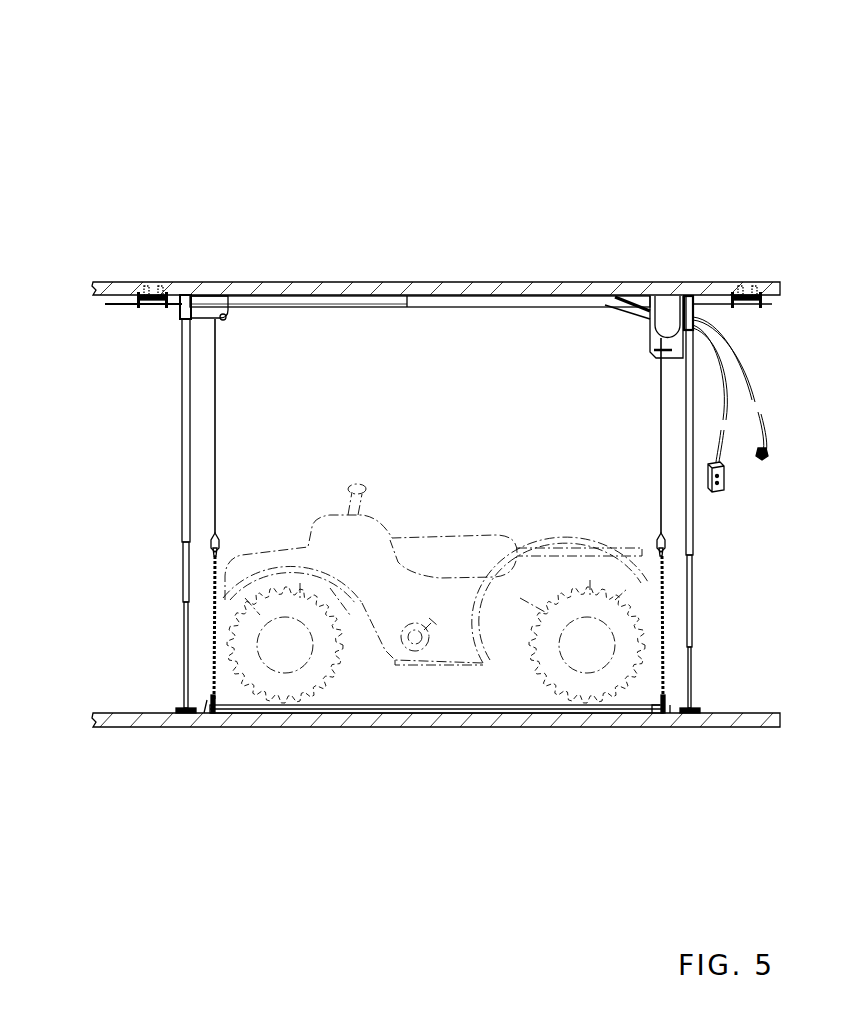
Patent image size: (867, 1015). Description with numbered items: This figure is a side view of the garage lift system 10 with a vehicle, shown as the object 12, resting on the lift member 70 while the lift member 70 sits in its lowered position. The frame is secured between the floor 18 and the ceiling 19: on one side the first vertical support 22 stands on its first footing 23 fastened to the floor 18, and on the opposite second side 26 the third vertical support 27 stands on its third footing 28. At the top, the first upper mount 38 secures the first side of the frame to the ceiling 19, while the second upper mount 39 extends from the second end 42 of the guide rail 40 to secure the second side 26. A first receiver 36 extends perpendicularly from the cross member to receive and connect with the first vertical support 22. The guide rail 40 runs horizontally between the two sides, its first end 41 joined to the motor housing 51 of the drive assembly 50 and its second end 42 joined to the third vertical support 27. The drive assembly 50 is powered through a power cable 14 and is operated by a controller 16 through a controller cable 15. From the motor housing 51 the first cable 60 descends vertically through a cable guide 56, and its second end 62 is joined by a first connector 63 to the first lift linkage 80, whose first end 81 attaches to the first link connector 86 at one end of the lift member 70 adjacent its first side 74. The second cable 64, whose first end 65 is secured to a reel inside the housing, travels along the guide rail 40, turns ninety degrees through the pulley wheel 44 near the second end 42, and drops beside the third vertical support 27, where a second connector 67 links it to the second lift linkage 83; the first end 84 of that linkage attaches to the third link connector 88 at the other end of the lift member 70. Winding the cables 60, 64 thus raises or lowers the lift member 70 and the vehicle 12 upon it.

The garage lift system 10 is at (215, 112).
The object 12 is at (413, 537).
The power cable 14 is at (740, 378).
The controller cable 15 is at (735, 468).
The controller 16 is at (726, 486).
The floor 18 is at (525, 727).
The ceiling 19 is at (532, 282).
The first vertical support 22 is at (694, 536).
The first footing 23 is at (696, 708).
The second side 26 is at (182, 470).
The third vertical support 27 is at (182, 426).
The third footing 28 is at (184, 706).
The first receiver 36 is at (700, 320).
The first upper mount 38 is at (742, 295).
The second upper mount 39 is at (138, 293).
The guide rail 40 is at (412, 307).
The first end 41 is at (646, 300).
The second end 42 is at (190, 300).
The pulley wheel 44 is at (228, 320).
The drive assembly 50 is at (636, 318).
The motor housing 51 is at (650, 336).
The cable guide 56 is at (660, 352).
The first cable 60 is at (658, 452).
The second end 62 is at (658, 536).
The first connector 63 is at (659, 550).
The second cable 64 is at (218, 462).
The first end 65 is at (220, 536).
The second connector 67 is at (222, 549).
The lift member 70 is at (325, 713).
The first side 74 is at (385, 709).
The first lift linkage 80 is at (668, 607).
The first end 81 is at (668, 680).
The second lift linkage 83 is at (212, 590).
The first end 84 is at (212, 667).
The first link connector 86 is at (663, 713).
The third link connector 88 is at (210, 697).